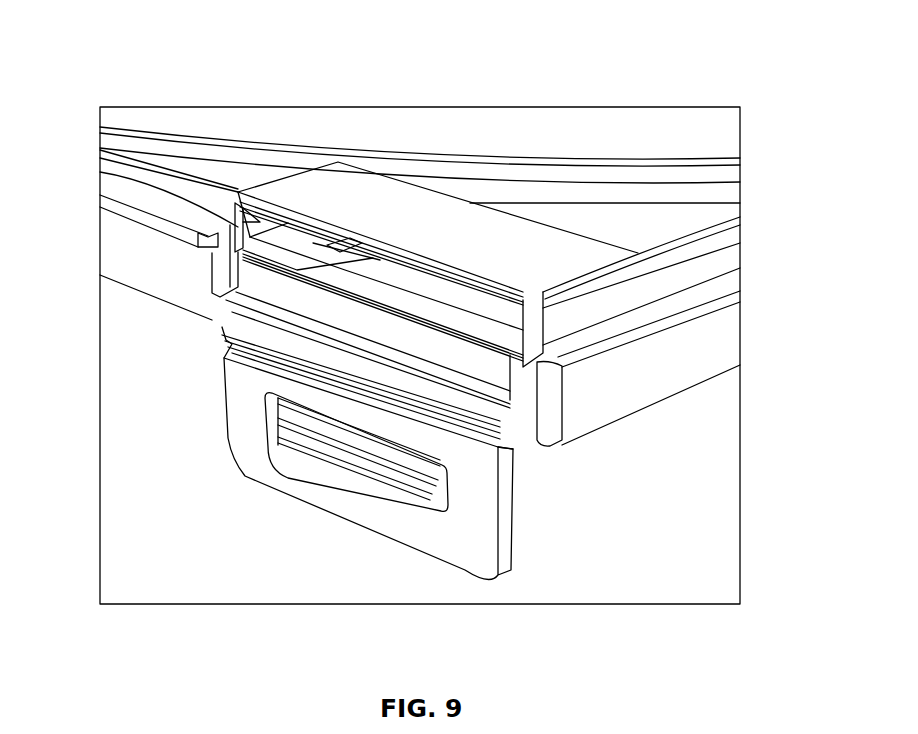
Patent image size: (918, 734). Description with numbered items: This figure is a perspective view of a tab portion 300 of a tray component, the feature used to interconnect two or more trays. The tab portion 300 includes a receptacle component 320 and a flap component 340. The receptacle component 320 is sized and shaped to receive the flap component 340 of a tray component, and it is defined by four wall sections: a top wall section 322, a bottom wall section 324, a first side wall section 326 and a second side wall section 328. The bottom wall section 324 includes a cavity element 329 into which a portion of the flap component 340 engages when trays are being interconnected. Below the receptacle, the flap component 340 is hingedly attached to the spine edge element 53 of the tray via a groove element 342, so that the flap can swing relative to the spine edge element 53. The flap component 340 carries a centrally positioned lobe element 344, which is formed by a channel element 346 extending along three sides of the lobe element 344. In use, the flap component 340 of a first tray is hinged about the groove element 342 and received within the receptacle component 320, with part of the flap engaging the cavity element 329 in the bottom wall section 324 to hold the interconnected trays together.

The tab portion 300 is at (148, 77).
The spine edge element 53 is at (138, 262).
The receptacle component 320 is at (443, 222).
The top wall section 322 is at (313, 183).
The bottom wall section 324 is at (500, 322).
The first side wall section 326 is at (243, 222).
The second side wall section 328 is at (703, 263).
The cavity element 329 is at (373, 258).
The flap component 340 is at (242, 448).
The groove element 342 is at (490, 445).
The lobe element 344 is at (402, 493).
The channel element 346 is at (335, 487).